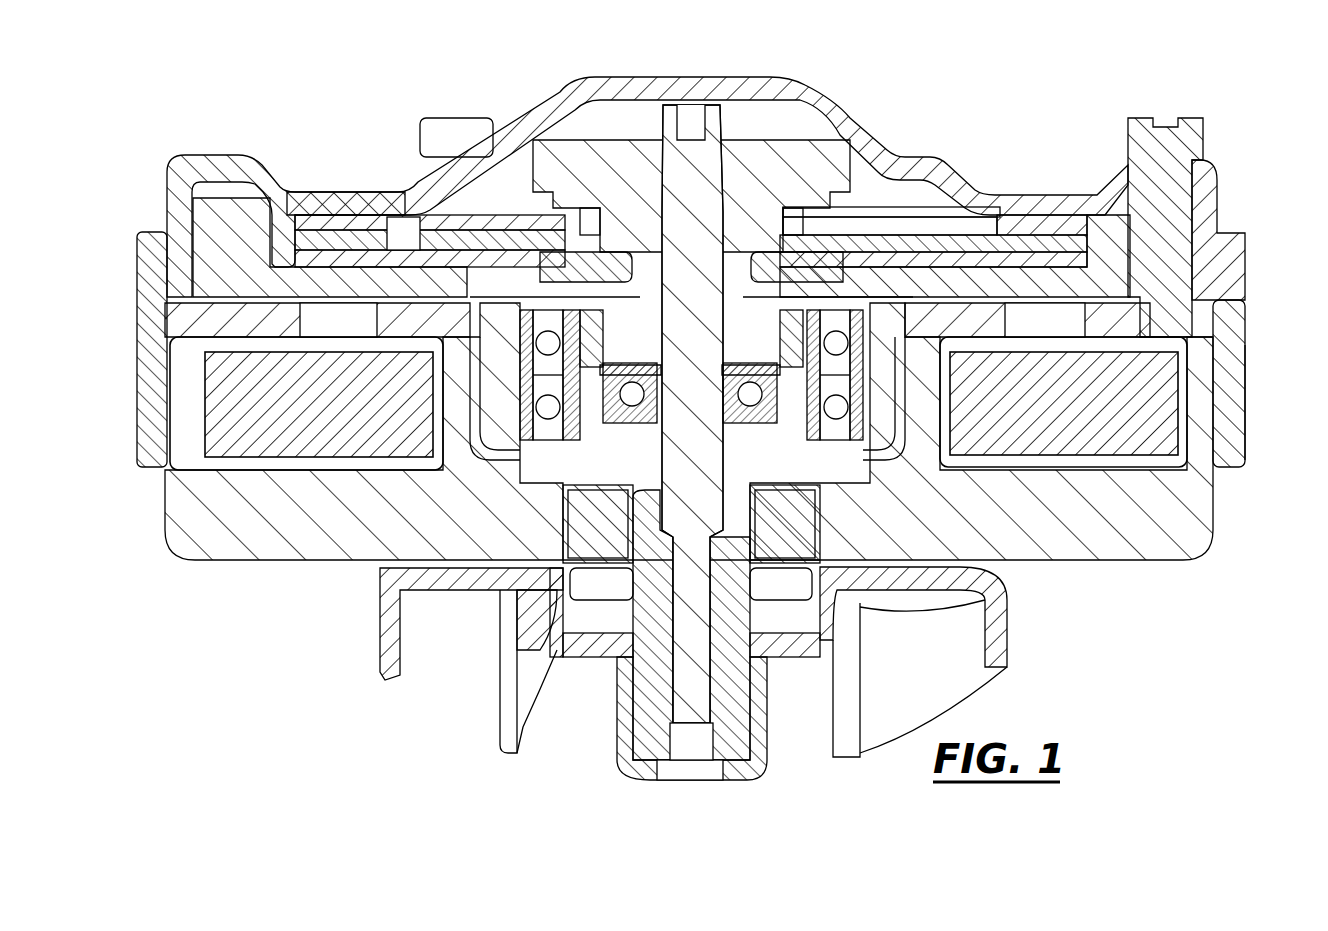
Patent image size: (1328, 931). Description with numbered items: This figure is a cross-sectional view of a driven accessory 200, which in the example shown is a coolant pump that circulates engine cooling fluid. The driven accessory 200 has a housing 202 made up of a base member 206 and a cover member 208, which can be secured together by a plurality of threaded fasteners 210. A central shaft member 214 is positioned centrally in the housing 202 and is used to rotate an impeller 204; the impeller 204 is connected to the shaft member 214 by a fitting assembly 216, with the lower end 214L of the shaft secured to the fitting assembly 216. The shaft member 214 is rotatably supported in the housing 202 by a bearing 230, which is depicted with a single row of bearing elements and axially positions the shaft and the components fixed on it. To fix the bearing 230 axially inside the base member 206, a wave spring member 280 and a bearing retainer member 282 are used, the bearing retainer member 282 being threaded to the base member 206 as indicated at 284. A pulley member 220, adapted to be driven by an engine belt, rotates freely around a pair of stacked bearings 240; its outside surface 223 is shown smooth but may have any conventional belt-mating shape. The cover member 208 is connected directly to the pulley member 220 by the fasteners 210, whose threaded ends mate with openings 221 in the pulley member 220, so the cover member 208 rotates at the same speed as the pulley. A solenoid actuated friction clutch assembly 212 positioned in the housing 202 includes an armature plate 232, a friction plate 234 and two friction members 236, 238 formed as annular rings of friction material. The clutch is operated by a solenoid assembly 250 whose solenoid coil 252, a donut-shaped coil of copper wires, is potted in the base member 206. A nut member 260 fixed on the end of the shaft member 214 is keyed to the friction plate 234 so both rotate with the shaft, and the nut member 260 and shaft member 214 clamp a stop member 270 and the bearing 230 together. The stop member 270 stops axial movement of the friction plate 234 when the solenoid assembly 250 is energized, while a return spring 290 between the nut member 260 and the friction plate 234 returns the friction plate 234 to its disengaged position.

The driven accessory 200 is at (295, 625).
The housing 202 is at (232, 165).
The impeller 204 is at (520, 715).
The base member 206 is at (1205, 483).
The cover member 208 is at (1210, 200).
The threaded fasteners 210 is at (450, 128).
The solenoid actuated friction clutch assembly 212 is at (872, 172).
The central shaft member 214 is at (694, 186).
The lower end of the shaft 214L is at (700, 650).
The fitting assembly 216 is at (650, 623).
The pulley member 220 is at (1235, 345).
The openings 221 is at (1200, 322).
The outside surface 223 is at (1245, 410).
The bearing 230 is at (630, 410).
The armature plate 232 is at (205, 270).
The friction plate 234 is at (1025, 240).
The friction member 236 is at (310, 260).
The friction member 238 is at (330, 225).
The bearings 240 is at (840, 415).
The solenoid assembly 250 is at (218, 440).
The solenoid coil 252 is at (305, 427).
The nut member 260 is at (620, 158).
The stop member 270 is at (567, 262).
The wave spring member 280 is at (740, 365).
The bearing retainer member 282 is at (810, 295).
The threaded connection 284 is at (540, 420).
The return spring 290 is at (815, 193).